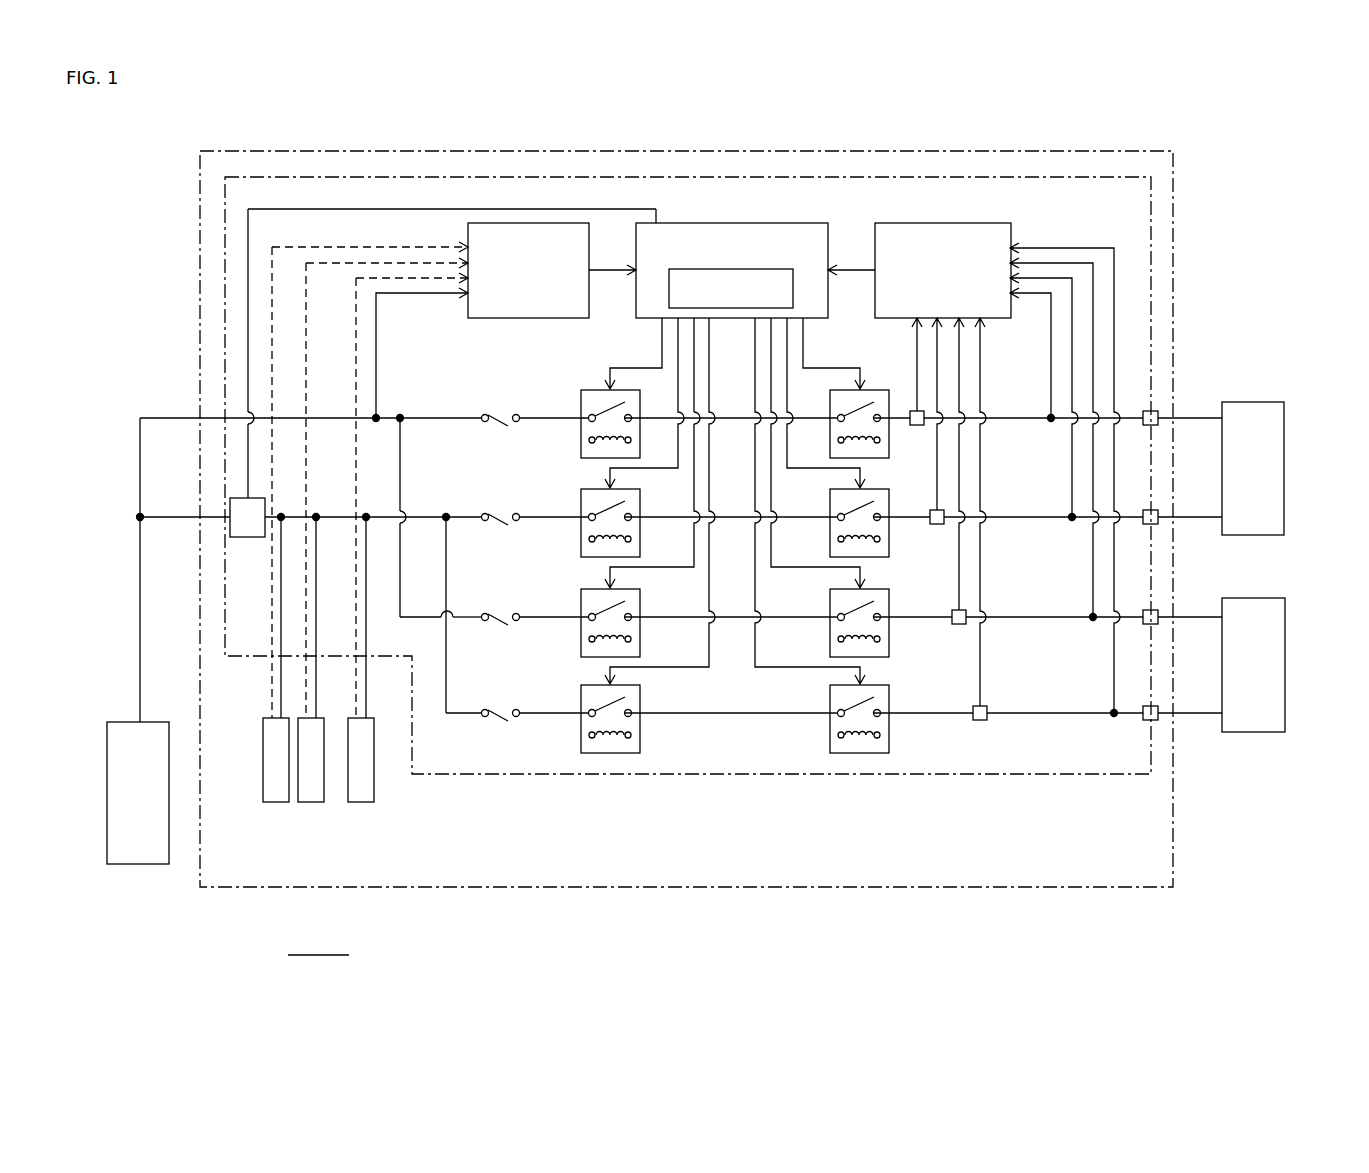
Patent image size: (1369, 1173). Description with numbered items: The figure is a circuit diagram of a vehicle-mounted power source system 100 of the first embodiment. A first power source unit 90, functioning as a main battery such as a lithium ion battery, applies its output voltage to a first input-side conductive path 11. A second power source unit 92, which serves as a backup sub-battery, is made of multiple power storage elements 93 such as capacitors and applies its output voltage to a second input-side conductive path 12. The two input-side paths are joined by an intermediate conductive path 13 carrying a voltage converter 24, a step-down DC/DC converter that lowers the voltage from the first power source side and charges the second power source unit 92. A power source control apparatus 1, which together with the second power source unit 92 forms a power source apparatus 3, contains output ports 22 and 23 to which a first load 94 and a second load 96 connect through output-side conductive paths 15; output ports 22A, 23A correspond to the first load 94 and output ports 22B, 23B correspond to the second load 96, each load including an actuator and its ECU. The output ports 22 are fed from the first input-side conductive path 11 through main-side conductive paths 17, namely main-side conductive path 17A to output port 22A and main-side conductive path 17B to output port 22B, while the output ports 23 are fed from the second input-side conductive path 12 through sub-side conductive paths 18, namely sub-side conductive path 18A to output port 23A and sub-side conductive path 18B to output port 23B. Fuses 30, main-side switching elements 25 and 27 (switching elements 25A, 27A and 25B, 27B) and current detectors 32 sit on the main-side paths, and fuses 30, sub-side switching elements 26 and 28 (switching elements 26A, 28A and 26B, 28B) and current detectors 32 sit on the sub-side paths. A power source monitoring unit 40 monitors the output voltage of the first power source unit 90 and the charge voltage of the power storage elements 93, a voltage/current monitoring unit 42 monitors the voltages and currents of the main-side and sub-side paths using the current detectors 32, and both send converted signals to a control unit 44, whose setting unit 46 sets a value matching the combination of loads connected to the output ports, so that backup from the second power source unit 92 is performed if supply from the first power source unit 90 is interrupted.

The vehicle-mounted power source system 100 is at (1257, 140).
The power source apparatus 3 is at (1013, 151).
The power source control apparatus 1 is at (1085, 177).
The first power source unit 90 is at (140, 866).
The first input-side conductive path 11 is at (329, 416).
The intermediate conductive path 13 is at (172, 520).
The voltage converter 24 is at (247, 538).
The second input-side conductive path 12 is at (423, 515).
The second power source unit 92 is at (316, 565).
The power storage elements 93 is at (376, 846).
The fuses 30 is at (484, 411).
The main-side conductive paths 17 is at (820, 485).
The main-side conductive path 17A is at (529, 416).
The main-side conductive path 17B is at (529, 615).
The sub-side conductive paths 18 is at (820, 583).
The sub-side conductive path 18A is at (529, 515).
The sub-side conductive path 18B is at (529, 711).
The main-side switching elements 25 is at (591, 487).
The main-side switching element 25A is at (581, 446).
The main-side switching element 25B is at (581, 639).
The sub-side switching elements 26 is at (599, 535).
The sub-side switching element 26A is at (581, 543).
The sub-side switching element 26B is at (581, 735).
The main-side switching elements 27 is at (874, 487).
The main-side switching element 27A is at (877, 389).
The main-side switching element 27B is at (872, 589).
The sub-side switching elements 28 is at (872, 535).
The sub-side switching element 28A is at (877, 489).
The sub-side switching element 28B is at (877, 686).
The current detectors 32 is at (917, 425).
The voltage/current monitoring unit 42 is at (937, 222).
The control unit 44 is at (732, 251).
The setting unit 46 is at (773, 268).
The power source monitoring unit 40 is at (528, 318).
The output ports 22 is at (1217, 488).
The output port 22A is at (1150, 410).
The output port 22B is at (1152, 610).
The output ports 23 is at (1217, 637).
The output port 23A is at (1154, 525).
The output port 23B is at (1154, 722).
The output-side conductive paths 15 is at (1198, 421).
The first load 94 is at (1284, 440).
The second load 96 is at (1285, 642).